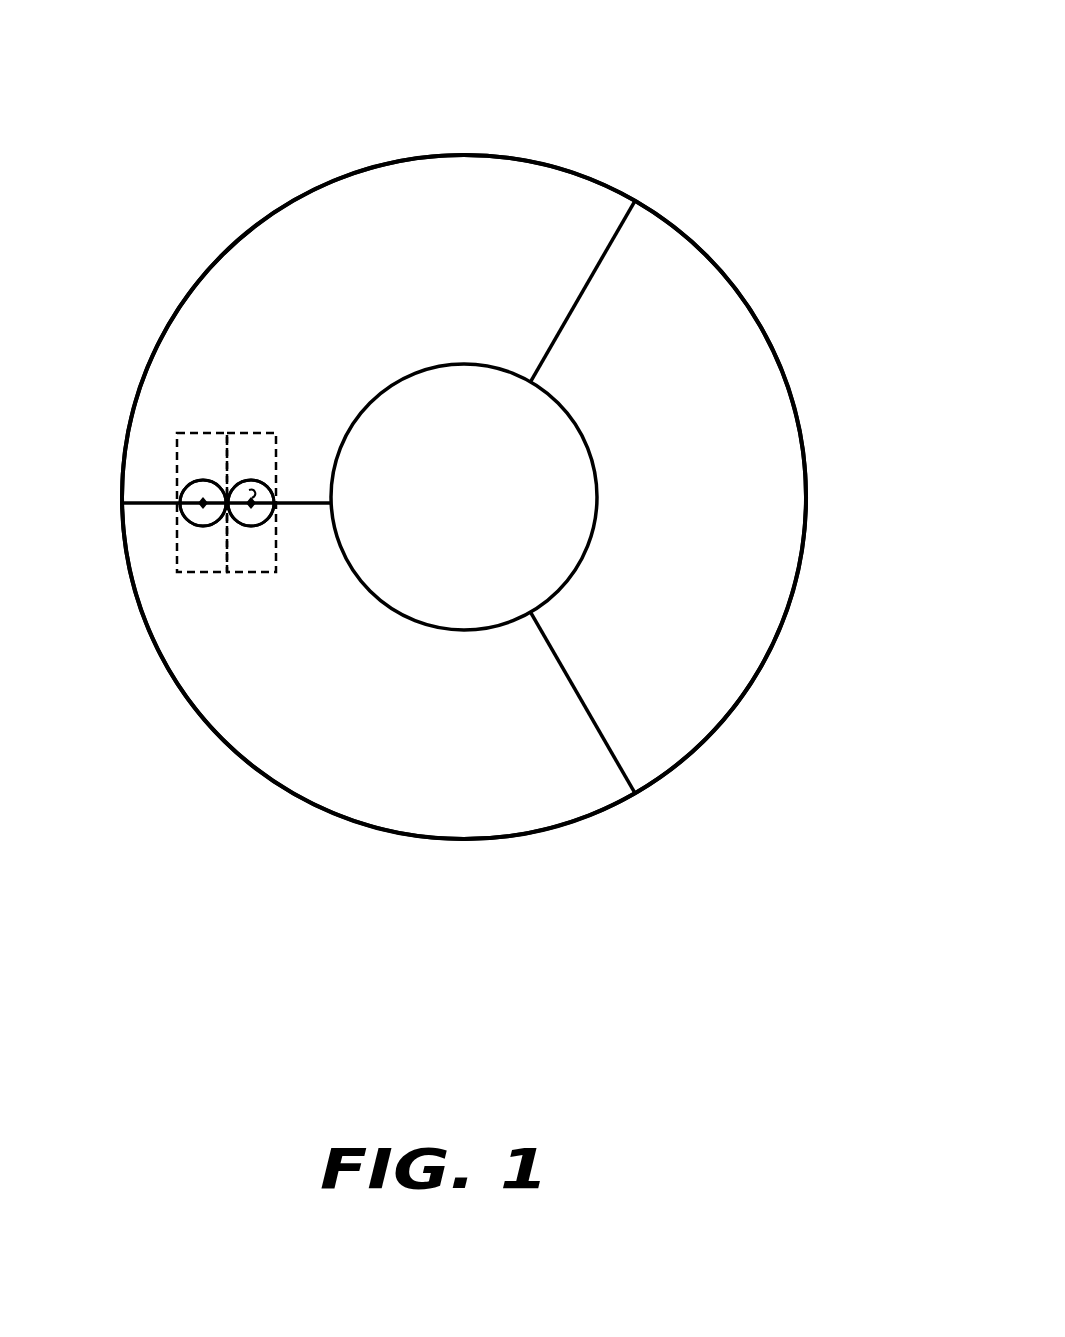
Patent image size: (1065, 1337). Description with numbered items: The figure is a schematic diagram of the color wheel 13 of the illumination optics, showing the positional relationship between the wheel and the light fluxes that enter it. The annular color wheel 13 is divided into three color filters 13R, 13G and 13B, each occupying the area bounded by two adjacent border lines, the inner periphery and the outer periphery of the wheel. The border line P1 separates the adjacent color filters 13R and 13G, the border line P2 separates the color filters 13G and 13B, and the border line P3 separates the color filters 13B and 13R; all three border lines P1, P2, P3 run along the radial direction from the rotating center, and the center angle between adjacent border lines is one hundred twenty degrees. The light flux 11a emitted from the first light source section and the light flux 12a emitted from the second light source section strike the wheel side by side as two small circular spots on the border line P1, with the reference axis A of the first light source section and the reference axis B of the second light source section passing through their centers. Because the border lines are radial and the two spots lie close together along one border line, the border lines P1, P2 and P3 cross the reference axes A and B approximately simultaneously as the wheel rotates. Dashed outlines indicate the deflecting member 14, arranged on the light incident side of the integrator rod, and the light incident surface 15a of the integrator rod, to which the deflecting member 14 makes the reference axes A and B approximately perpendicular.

The color wheel 13 is at (769, 122).
The color filter 13R is at (318, 217).
The color filter 13G is at (418, 815).
The color filter 13B is at (790, 468).
The border line P1 is at (147, 502).
The border line P2 is at (627, 755).
The border line P3 is at (605, 243).
The light incident surface 15a is at (217, 485).
The deflecting member 14 is at (238, 580).
The light flux 12a is at (207, 518).
The light flux 11a is at (273, 540).
The reference axis A is at (247, 487).
The reference axis B is at (201, 550).